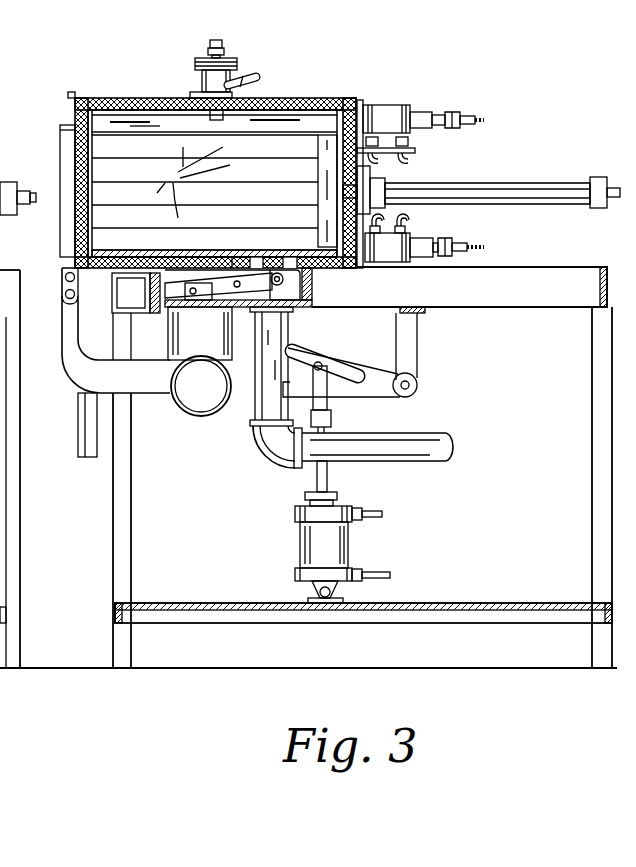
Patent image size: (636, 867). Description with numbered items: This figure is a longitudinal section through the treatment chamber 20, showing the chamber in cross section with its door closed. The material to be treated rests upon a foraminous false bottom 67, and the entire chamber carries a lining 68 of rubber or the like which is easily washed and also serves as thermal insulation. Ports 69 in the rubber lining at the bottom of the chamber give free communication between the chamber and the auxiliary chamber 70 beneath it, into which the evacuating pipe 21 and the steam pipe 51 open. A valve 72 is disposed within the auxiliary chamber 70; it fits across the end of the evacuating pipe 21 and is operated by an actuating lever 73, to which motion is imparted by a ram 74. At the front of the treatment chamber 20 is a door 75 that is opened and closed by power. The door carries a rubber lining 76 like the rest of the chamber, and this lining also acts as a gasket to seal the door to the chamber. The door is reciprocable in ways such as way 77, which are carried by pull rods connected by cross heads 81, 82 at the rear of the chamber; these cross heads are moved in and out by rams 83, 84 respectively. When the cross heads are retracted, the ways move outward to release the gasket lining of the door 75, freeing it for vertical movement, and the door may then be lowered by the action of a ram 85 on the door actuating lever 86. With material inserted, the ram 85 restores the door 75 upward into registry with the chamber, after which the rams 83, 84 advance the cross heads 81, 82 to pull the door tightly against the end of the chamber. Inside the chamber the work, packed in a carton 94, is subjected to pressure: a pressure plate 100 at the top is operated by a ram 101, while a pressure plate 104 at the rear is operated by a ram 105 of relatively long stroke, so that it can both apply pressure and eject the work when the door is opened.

The treatment chamber 20 is at (305, 98).
The evacuating pipe 21 is at (200, 405).
The steam pipe 51 is at (268, 402).
The foraminous false bottom 67 is at (155, 237).
The lining 68 is at (272, 98).
The ports 69 is at (258, 262).
The auxiliary chamber 70 is at (296, 289).
The valve 72 is at (186, 304).
The actuating lever 73 is at (258, 279).
The ram 74 is at (289, 331).
The door 75 is at (78, 223).
The rubber lining 76 is at (78, 237).
The way 77 is at (88, 412).
The cross head 81 is at (484, 120).
The cross head 82 is at (484, 247).
The ram 83 is at (392, 112).
The ram 84 is at (393, 247).
The ram 85 is at (343, 547).
The door actuating lever 86 is at (82, 363).
The carton 94 is at (193, 182).
The pressure plate 100 is at (155, 128).
The ram 101 is at (198, 78).
The pressure plate 104 is at (325, 182).
The ram 105 is at (487, 194).